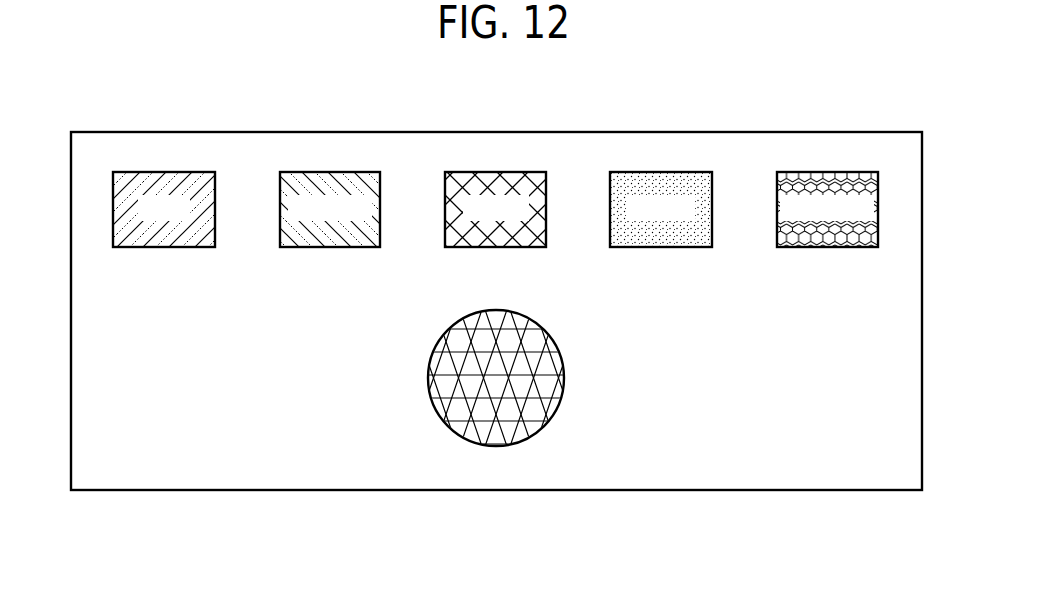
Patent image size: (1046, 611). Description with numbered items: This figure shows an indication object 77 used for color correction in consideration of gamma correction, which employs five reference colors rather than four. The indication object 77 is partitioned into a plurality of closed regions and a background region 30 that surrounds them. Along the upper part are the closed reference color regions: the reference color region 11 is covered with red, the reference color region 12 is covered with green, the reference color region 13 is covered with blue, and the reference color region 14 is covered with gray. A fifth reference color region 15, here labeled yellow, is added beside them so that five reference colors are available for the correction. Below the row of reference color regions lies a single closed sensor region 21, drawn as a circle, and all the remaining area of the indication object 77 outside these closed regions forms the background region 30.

The indication object 77 is at (839, 116).
The reference color region 11 is at (168, 248).
The reference color region 12 is at (332, 248).
The reference color region 13 is at (531, 248).
The reference color region 14 is at (663, 248).
The fifth reference color region 15 is at (825, 248).
The sensor region 21 is at (441, 417).
The background region 30 is at (748, 459).